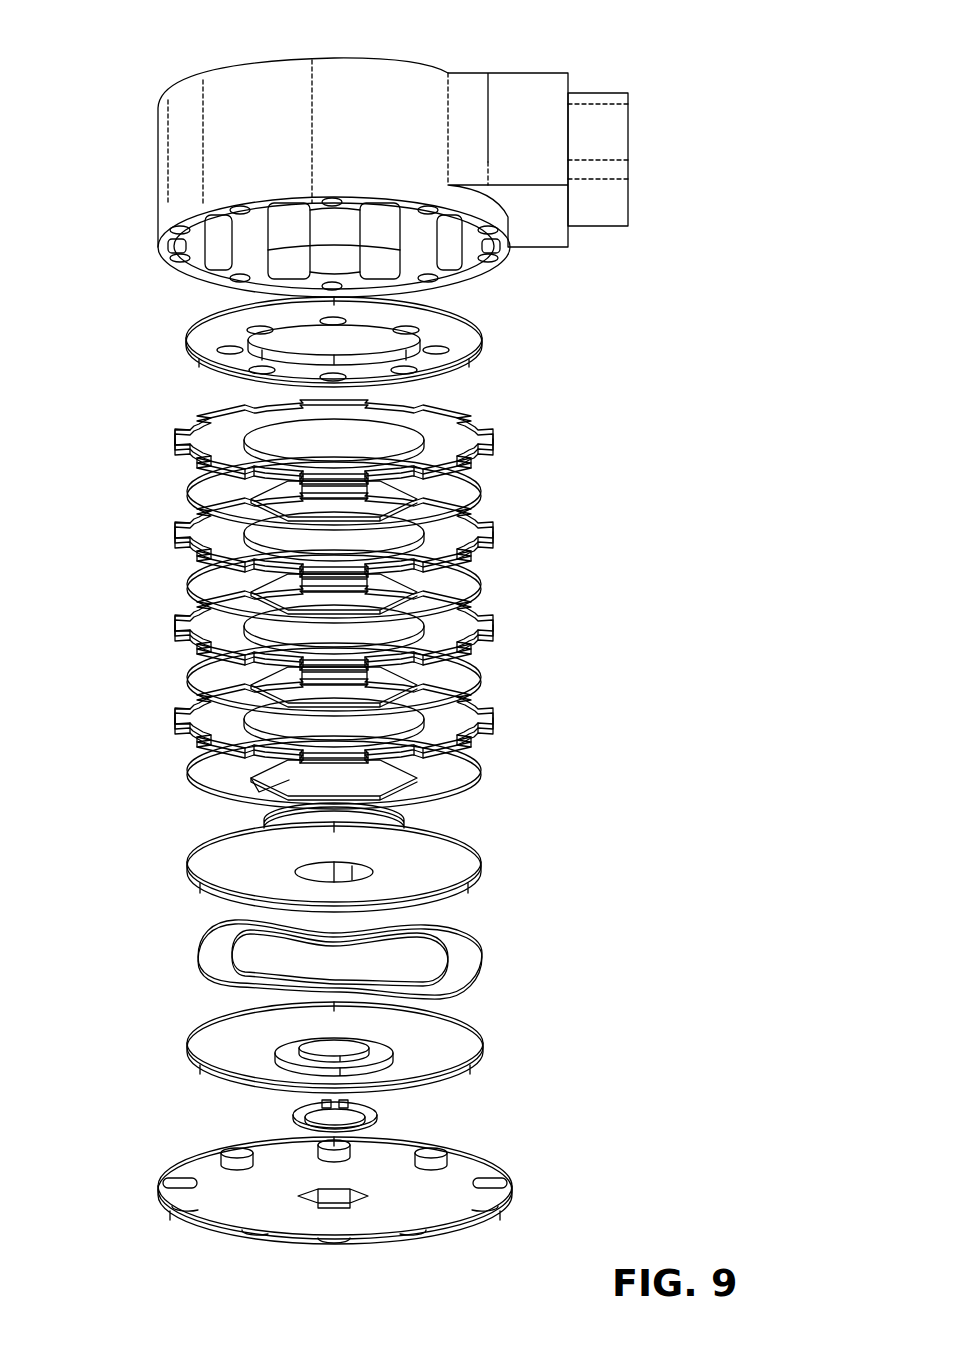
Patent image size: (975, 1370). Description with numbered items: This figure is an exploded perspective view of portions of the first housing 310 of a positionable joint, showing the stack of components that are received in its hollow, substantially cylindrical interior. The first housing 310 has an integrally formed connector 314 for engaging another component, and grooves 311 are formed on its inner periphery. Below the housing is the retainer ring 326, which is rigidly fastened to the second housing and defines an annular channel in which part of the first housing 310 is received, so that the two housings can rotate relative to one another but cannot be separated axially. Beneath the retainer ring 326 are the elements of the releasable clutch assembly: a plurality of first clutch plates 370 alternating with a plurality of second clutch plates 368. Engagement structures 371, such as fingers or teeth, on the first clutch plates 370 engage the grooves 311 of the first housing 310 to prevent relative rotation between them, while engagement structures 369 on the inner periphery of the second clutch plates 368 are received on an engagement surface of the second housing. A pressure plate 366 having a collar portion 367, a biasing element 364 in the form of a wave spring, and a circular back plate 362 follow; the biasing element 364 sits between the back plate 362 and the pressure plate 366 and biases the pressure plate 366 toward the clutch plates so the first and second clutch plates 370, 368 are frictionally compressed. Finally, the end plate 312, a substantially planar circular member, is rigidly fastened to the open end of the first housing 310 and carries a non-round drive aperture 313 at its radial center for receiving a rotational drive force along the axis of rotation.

The first housing 310 is at (146, 128).
The grooves 311 is at (272, 260).
The end plate 312 is at (474, 1160).
The drive aperture 313 is at (328, 1202).
The connector 314 is at (600, 93).
The retainer ring 326 is at (483, 342).
The back plate 362 is at (456, 1025).
The biasing element 364 is at (475, 965).
The pressure plate 366 is at (480, 868).
The collar portion 367 is at (400, 806).
The second clutch plates 368 is at (480, 494).
The engagement structures 369 is at (360, 480).
The first clutch plates 370 is at (496, 446).
The engagement structures 371 is at (176, 438).